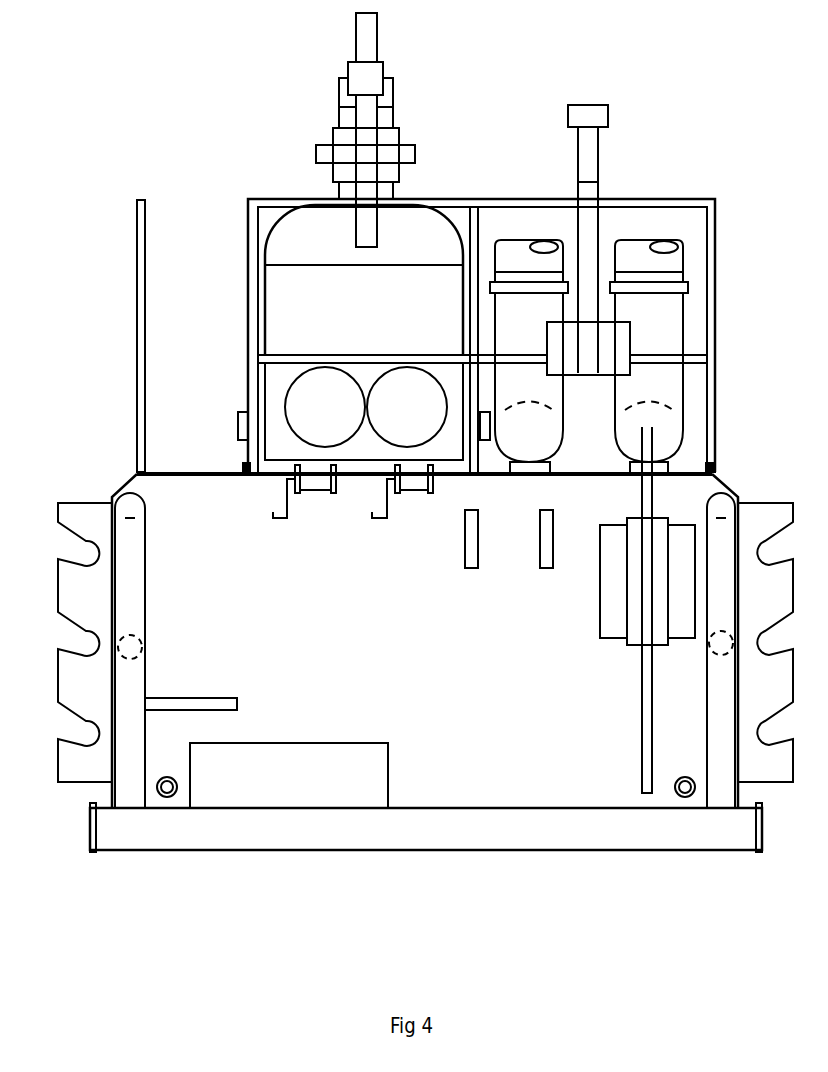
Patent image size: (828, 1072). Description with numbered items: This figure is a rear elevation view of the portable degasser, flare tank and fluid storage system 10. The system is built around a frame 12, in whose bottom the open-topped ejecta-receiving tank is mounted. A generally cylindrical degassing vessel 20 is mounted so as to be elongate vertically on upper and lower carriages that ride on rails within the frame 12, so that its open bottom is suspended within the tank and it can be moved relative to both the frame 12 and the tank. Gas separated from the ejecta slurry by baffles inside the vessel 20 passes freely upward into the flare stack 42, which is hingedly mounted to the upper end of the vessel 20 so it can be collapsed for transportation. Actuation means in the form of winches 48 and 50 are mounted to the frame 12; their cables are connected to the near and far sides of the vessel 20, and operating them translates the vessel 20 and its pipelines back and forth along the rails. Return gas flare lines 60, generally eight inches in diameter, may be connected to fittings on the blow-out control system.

The portable degasser, flare tank and fluid storage system 10 is at (105, 463).
The frame 12 is at (211, 588).
The degassing vessel 20 is at (277, 287).
The flare stack 42 is at (398, 82).
The winch 48 is at (413, 494).
The winch 50 is at (314, 494).
The return gas flare lines 60 is at (678, 323).